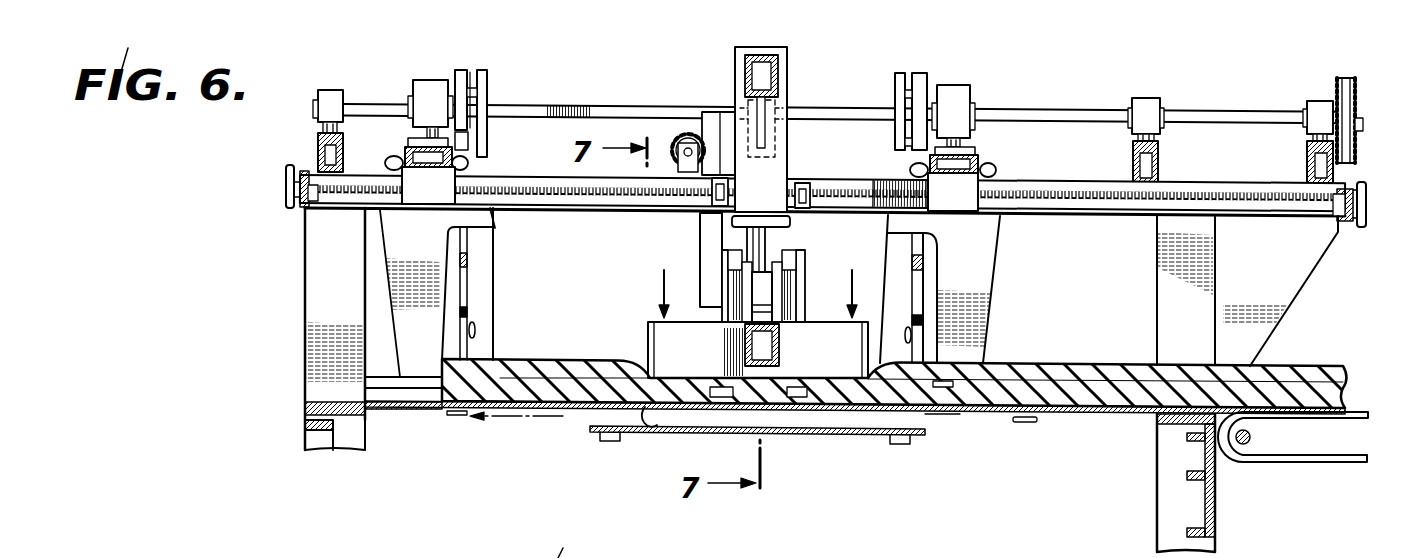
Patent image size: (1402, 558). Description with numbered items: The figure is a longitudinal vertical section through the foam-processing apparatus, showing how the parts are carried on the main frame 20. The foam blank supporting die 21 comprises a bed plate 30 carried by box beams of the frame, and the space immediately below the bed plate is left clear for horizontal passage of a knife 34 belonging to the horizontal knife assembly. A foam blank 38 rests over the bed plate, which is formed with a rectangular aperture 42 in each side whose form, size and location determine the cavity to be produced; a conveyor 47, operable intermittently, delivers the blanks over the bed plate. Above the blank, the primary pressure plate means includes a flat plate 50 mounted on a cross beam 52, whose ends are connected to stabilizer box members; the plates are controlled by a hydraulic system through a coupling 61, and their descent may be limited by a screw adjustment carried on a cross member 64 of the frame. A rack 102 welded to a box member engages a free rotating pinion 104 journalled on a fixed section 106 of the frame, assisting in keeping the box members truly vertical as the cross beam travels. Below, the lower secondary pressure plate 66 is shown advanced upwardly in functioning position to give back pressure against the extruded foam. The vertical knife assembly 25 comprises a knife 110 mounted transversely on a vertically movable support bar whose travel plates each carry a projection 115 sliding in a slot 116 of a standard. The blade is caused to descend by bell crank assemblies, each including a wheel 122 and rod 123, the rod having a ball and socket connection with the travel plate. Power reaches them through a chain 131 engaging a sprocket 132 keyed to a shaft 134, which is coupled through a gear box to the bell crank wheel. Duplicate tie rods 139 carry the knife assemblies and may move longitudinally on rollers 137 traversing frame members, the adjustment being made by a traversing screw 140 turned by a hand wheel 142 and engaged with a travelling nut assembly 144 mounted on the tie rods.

The main frame 20 is at (1140, 530).
The foam blank supporting die 21 is at (1122, 424).
The vertical knife assembly 25 is at (510, 307).
The bed plate 30 is at (938, 416).
The knife 34 is at (458, 418).
The foam blank 38 is at (1082, 365).
The aperture 42 is at (650, 428).
The conveyor 47 is at (1335, 472).
The flat plate 50 is at (680, 368).
The cross beam 52 is at (778, 342).
The coupling 61 is at (770, 284).
The cross member 64 is at (778, 68).
The flat plate 66 is at (800, 436).
The rack 102 is at (706, 126).
The pinion 104 is at (676, 134).
The fixed section 106 is at (1100, 214).
The knife 110 is at (478, 331).
The projection 115 is at (466, 270).
The slot 116 is at (920, 345).
The wheel 122 is at (455, 70).
The rod 123 is at (488, 95).
The chain 131 is at (1335, 82).
The sprocket 132 is at (1357, 100).
The shaft 134 is at (553, 104).
The roller 137 is at (391, 160).
The tie rod 139 is at (990, 158).
The traversing screw 140 is at (629, 208).
The hand wheel 142 is at (286, 184).
The travelling nut assembly 144 is at (432, 206).